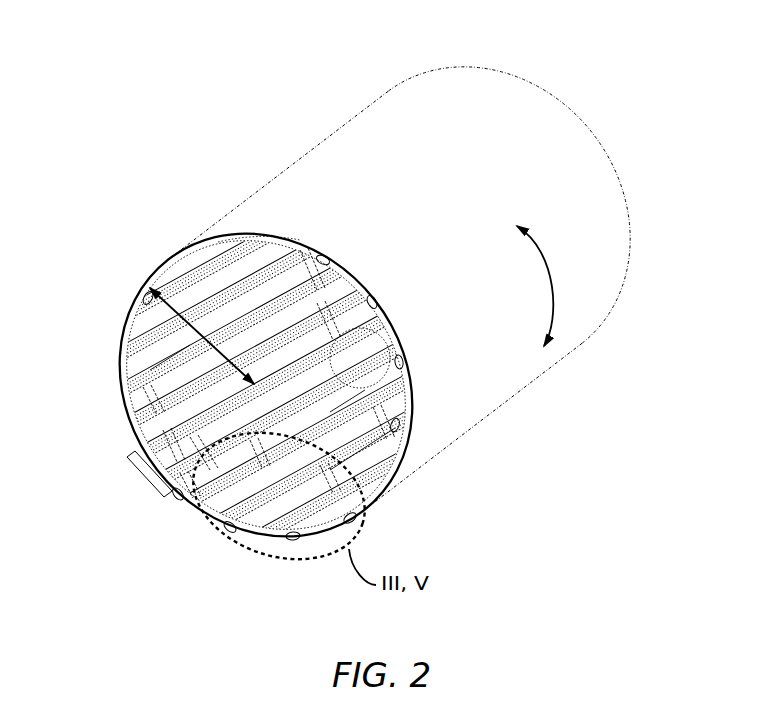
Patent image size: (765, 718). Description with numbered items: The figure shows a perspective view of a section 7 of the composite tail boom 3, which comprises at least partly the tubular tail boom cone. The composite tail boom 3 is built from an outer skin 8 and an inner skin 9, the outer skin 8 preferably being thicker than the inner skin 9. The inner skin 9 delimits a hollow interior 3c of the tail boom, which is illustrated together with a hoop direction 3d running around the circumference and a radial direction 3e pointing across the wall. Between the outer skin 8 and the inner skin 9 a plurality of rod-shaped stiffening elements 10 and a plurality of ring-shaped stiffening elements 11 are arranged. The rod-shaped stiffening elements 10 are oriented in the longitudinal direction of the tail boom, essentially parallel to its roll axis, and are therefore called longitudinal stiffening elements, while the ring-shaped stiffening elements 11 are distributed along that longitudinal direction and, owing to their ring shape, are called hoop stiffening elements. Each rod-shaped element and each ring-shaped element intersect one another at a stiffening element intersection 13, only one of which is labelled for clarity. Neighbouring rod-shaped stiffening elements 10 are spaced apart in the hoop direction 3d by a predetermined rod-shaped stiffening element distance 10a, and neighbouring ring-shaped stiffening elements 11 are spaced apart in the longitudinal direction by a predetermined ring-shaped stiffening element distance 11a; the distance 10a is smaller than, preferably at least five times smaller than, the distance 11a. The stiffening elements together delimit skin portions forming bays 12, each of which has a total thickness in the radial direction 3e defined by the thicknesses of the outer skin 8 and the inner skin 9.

The composite tail boom 3 is at (490, 62).
The hollow interior 3c is at (266, 294).
The hoop direction 3d is at (553, 281).
The radial direction 3e is at (176, 306).
The section 7 is at (315, 66).
The outer skin 8 is at (588, 156).
The inner skin 9 is at (354, 400).
The rod-shaped stiffening elements 10 is at (178, 499).
The rod-shaped stiffening element distance 10a is at (126, 468).
The ring-shaped stiffening elements 11 is at (303, 286).
The ring-shaped stiffening element distance 11a is at (378, 453).
The bays 12 is at (176, 369).
The stiffening element intersection 13 is at (387, 343).